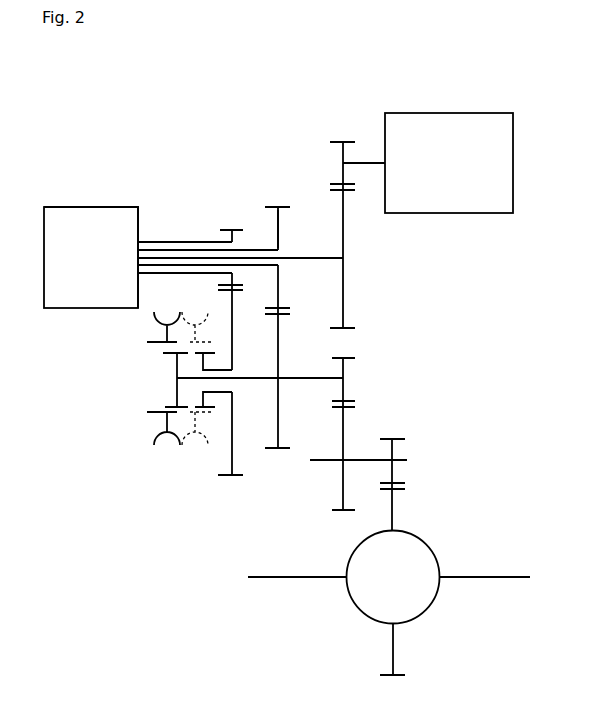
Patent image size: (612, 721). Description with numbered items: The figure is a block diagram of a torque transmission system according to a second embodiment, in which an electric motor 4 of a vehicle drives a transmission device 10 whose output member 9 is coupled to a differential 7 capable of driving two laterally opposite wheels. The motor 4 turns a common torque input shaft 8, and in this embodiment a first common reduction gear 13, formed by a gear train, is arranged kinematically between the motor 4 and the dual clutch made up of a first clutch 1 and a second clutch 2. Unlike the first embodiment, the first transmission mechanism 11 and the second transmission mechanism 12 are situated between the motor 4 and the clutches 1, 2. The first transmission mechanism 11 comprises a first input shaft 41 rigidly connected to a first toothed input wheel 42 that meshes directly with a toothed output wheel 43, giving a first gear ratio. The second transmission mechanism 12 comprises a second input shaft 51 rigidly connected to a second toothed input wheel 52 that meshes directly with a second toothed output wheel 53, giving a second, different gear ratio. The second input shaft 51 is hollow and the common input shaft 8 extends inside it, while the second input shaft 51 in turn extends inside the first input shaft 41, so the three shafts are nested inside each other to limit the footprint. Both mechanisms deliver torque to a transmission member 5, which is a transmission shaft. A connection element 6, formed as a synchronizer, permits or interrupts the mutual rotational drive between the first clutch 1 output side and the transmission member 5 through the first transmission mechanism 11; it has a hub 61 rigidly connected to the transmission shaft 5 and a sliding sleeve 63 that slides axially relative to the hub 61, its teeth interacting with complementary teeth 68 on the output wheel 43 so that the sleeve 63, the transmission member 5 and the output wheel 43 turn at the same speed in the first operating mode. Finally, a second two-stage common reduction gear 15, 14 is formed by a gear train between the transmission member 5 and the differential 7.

The first clutch 1 is at (72, 240).
The second clutch 2 is at (113, 232).
The electric motor 4 is at (449, 163).
The transmission member 5 is at (297, 377).
The connection element 6 is at (162, 340).
The differential 7 is at (396, 568).
The common torque input shaft 8 is at (300, 257).
The output member 9 is at (388, 438).
The transmission device 10 is at (218, 156).
The first transmission mechanism 11 is at (215, 206).
The second transmission mechanism 12 is at (260, 186).
The first common reduction gear 13 is at (360, 122).
The second two-stage common reduction gear stage 14 is at (546, 448).
The second two-stage common reduction gear stage 15 is at (443, 358).
The first input shaft 41 is at (167, 240).
The first toothed input wheel 42 is at (222, 238).
The toothed output wheel 43 is at (228, 440).
The second input shaft 51 is at (257, 248).
The second toothed input wheel 52 is at (280, 230).
The second toothed output wheel 53 is at (282, 423).
The hub 61 is at (172, 369).
The sliding sleeve 63 is at (160, 313).
The complementary teeth 68 is at (175, 398).